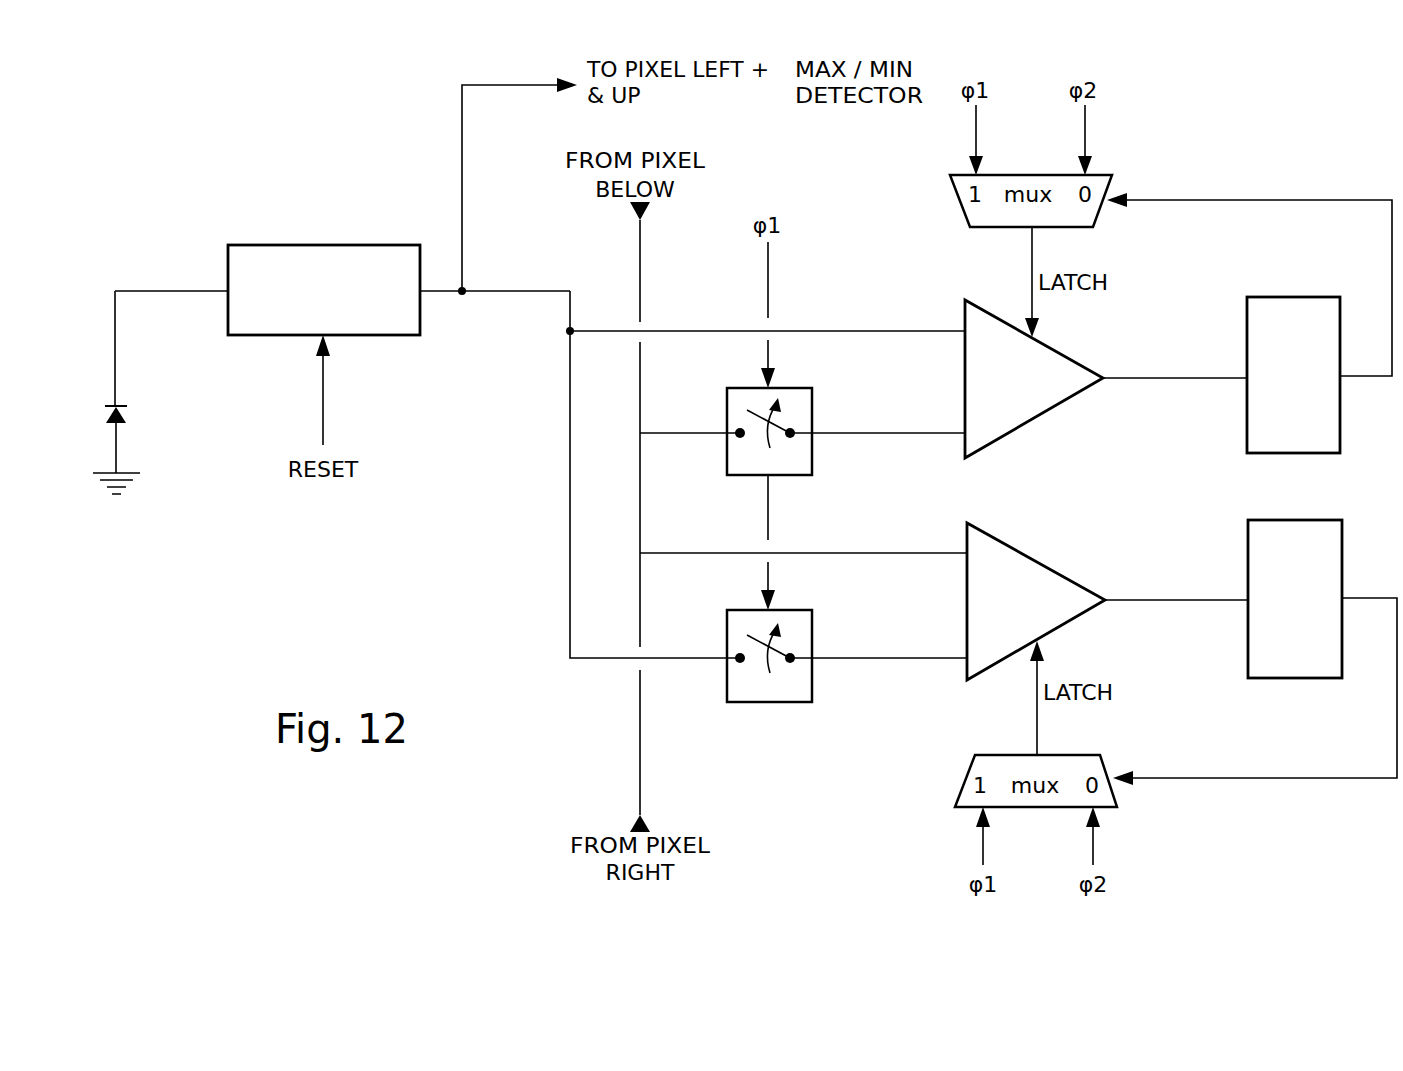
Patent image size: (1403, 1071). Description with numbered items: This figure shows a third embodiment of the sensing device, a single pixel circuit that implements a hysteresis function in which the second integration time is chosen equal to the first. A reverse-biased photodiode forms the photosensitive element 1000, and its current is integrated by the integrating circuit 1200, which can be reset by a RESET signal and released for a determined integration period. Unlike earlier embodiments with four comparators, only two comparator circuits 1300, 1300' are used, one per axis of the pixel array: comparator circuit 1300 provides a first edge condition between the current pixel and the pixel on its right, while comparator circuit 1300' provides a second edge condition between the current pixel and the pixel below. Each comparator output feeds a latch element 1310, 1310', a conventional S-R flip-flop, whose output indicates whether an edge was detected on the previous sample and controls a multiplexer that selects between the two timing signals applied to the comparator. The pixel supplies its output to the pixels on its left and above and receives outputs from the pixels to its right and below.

The photosensitive element 1000 is at (128, 415).
The integrating circuit 1200 is at (323, 245).
The comparator circuit 1300 is at (1041, 380).
The comparator circuit 1300' is at (1044, 597).
The latch element 1310 is at (1281, 345).
The latch element 1310' is at (1280, 570).